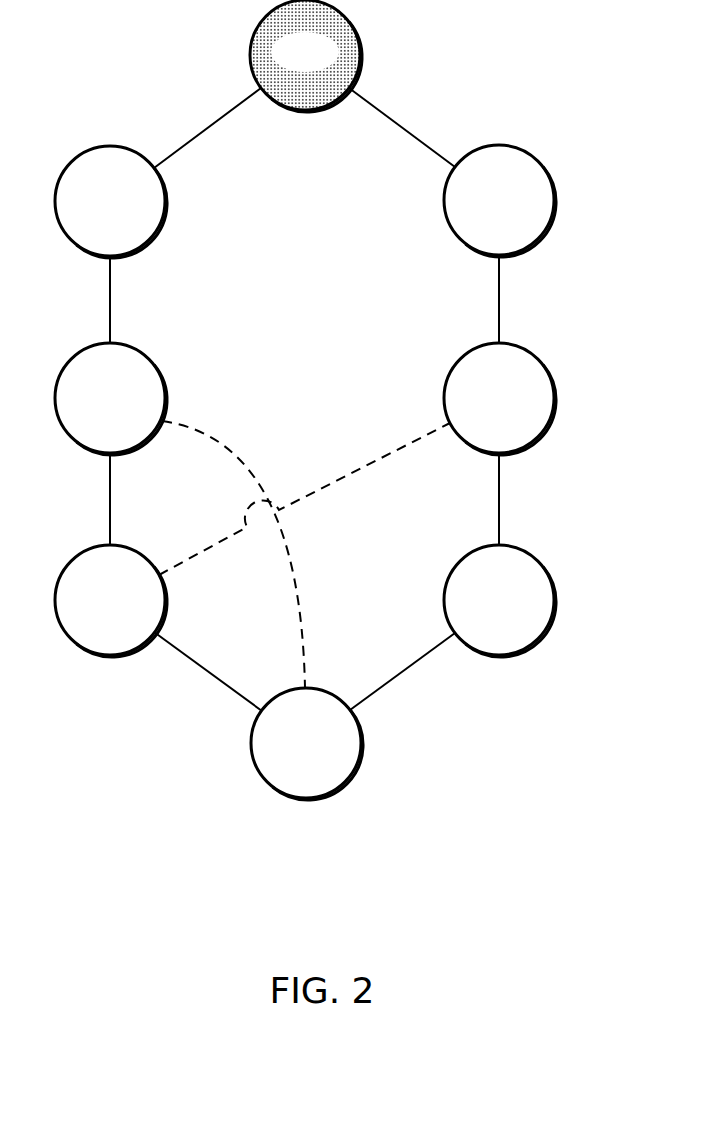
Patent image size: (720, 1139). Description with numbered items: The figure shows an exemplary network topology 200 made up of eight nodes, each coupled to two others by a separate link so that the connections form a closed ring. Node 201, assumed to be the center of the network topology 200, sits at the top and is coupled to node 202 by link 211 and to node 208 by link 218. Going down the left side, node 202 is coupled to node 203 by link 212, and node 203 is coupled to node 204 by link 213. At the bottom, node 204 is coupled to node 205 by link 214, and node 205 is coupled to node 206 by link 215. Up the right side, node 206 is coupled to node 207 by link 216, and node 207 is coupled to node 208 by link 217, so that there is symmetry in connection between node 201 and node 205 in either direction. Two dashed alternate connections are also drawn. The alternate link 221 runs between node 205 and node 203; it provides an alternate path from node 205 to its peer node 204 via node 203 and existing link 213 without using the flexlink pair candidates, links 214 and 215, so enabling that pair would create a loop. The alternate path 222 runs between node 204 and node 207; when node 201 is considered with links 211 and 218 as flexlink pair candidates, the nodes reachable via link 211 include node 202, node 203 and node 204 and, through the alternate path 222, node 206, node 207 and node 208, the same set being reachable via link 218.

The network topology 200 is at (210, 866).
The node 201 is at (286, 69).
The node 202 is at (91, 214).
The node 203 is at (91, 411).
The node 204 is at (91, 613).
The node 205 is at (287, 756).
The node 206 is at (480, 613).
The node 207 is at (480, 411).
The node 208 is at (480, 213).
The link 211 is at (190, 141).
The link 212 is at (110, 297).
The link 213 is at (110, 500).
The link 214 is at (228, 690).
The link 215 is at (410, 667).
The link 216 is at (499, 500).
The link 217 is at (499, 302).
The link 218 is at (417, 140).
The alternate link 221 is at (297, 597).
The alternate path 222 is at (350, 472).